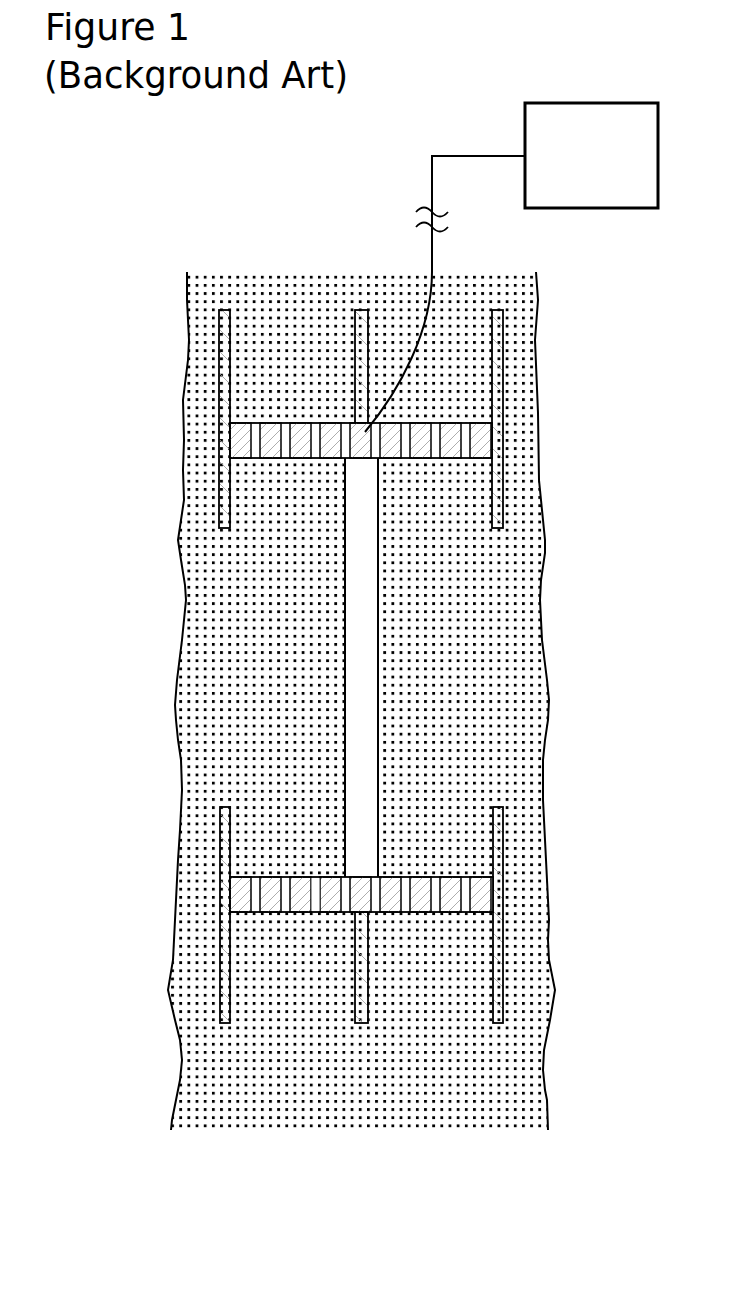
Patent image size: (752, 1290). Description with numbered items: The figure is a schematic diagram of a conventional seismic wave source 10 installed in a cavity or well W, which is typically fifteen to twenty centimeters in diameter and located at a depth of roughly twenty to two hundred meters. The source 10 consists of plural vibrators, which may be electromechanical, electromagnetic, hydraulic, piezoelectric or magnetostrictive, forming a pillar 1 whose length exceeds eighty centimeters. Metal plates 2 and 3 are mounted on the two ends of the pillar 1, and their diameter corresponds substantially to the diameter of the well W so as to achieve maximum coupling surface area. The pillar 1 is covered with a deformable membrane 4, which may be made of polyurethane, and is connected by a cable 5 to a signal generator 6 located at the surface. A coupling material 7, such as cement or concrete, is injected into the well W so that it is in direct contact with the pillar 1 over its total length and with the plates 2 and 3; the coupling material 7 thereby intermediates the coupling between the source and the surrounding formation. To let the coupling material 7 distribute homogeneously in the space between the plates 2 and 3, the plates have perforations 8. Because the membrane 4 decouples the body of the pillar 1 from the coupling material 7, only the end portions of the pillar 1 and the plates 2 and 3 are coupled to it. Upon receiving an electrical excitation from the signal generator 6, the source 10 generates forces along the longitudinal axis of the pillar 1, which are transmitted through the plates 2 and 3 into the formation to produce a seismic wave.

The pillar 1 is at (368, 666).
The plate 2 is at (295, 408).
The plate 3 is at (298, 928).
The deformable membrane 4 is at (330, 704).
The cable 5 is at (378, 188).
The signal generator 6 is at (601, 166).
The coupling material 7 is at (377, 1098).
The perforations 8 is at (315, 903).
The seismic wave source 10 is at (305, 217).
The well W is at (547, 1102).